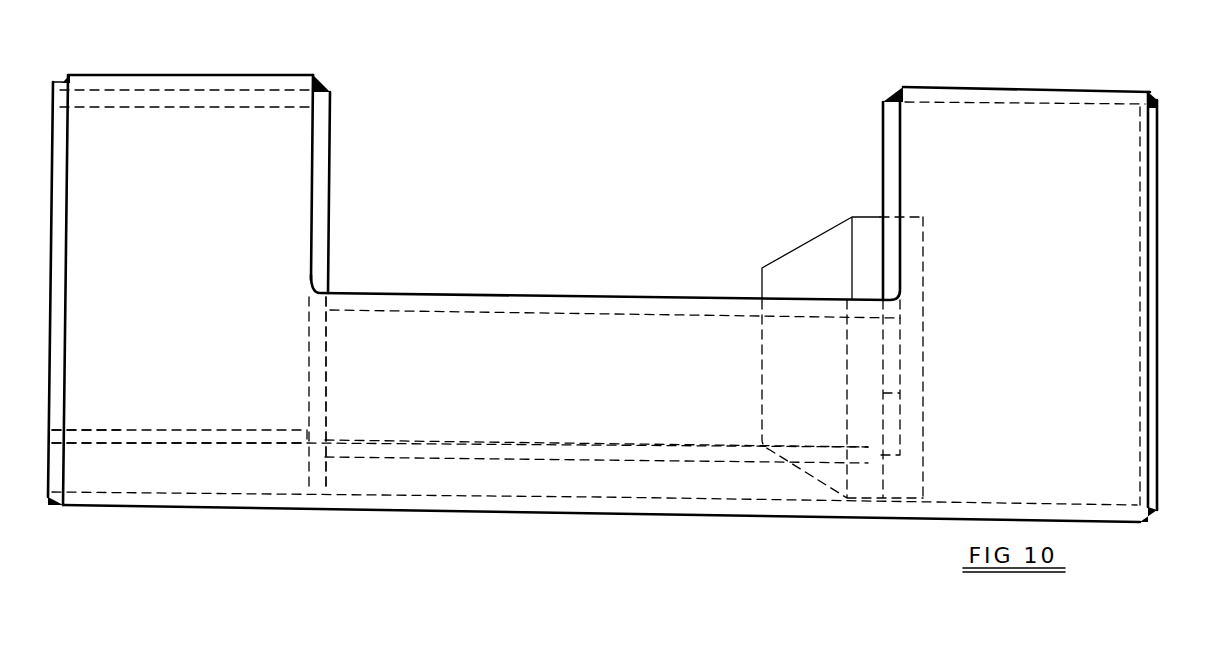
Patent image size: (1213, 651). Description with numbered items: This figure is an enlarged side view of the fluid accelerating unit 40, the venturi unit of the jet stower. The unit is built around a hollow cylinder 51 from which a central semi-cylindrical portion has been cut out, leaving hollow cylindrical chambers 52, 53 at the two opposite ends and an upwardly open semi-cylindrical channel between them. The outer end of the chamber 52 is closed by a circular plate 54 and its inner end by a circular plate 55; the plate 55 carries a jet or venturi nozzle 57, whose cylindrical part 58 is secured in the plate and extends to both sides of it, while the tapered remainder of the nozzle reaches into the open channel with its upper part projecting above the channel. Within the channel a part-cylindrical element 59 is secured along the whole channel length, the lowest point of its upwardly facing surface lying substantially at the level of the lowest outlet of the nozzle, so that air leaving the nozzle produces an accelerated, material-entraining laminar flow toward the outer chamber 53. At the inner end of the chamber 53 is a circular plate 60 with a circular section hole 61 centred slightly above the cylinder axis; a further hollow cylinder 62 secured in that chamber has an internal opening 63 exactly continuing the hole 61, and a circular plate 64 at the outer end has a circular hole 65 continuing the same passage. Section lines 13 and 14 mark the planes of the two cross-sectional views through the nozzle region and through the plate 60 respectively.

The fluid accelerating unit 40 is at (474, 345).
The hollow cylinder 51 is at (963, 87).
The hollow cylindrical chamber 52 is at (1113, 237).
The hollow cylindrical chamber 53 is at (121, 128).
The circular plate 54 is at (1158, 313).
The circular plate 55 is at (890, 138).
The jet or venturi nozzle 57 is at (827, 270).
The cylindrical part of the nozzle 58 is at (858, 230).
The part-cylindrical element 59 is at (613, 447).
The circular plate 60 is at (330, 96).
The circular section hole 61 is at (318, 426).
The further hollow cylinder 62 is at (193, 445).
The internally defined opening 63 is at (202, 115).
The circular plate 64 is at (66, 143).
The circular hole 65 is at (66, 432).
The section line 13- 13 is at (695, 101).
The section line 14- 14 is at (541, 98).